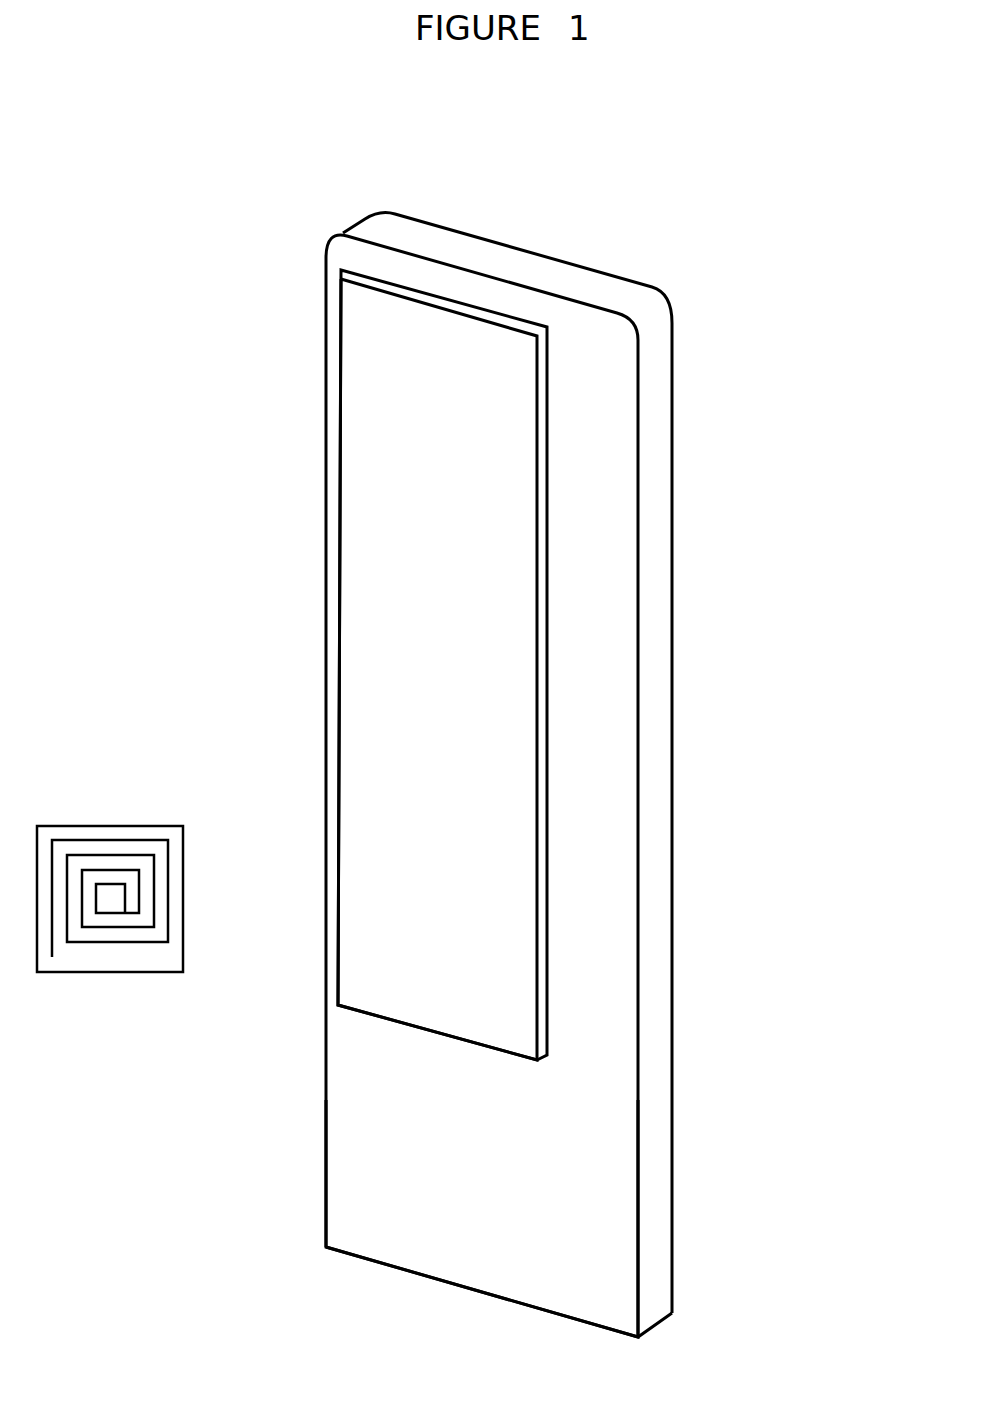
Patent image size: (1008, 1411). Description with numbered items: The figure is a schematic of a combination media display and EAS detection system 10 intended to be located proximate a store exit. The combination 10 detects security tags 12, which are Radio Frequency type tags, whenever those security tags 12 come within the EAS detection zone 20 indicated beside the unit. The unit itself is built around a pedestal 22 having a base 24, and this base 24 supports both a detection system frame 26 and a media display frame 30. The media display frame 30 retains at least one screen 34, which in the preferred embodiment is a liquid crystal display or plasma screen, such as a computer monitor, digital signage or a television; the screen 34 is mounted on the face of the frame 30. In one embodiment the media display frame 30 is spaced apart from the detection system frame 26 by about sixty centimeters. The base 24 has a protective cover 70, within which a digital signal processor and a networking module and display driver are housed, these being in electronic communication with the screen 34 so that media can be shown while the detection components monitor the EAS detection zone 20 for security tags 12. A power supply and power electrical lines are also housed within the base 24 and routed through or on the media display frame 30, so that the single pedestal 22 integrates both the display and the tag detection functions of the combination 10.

The combination media display and EAS detection system 10 is at (297, 292).
The security tag 12 is at (97, 822).
The EAS detection zone 20 is at (297, 677).
The pedestal 22 is at (649, 1180).
The base 24 is at (649, 1210).
The detection system frame 26 is at (672, 705).
The media display frame 30 is at (335, 457).
The screen 34 is at (368, 490).
The protective cover 70 is at (417, 1080).